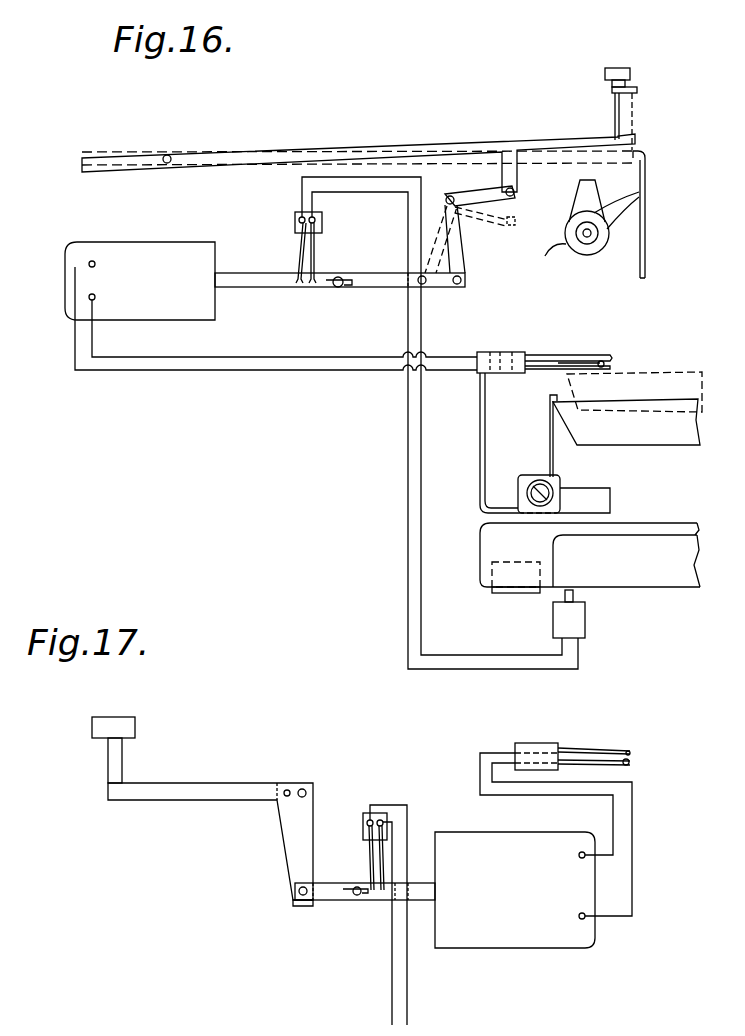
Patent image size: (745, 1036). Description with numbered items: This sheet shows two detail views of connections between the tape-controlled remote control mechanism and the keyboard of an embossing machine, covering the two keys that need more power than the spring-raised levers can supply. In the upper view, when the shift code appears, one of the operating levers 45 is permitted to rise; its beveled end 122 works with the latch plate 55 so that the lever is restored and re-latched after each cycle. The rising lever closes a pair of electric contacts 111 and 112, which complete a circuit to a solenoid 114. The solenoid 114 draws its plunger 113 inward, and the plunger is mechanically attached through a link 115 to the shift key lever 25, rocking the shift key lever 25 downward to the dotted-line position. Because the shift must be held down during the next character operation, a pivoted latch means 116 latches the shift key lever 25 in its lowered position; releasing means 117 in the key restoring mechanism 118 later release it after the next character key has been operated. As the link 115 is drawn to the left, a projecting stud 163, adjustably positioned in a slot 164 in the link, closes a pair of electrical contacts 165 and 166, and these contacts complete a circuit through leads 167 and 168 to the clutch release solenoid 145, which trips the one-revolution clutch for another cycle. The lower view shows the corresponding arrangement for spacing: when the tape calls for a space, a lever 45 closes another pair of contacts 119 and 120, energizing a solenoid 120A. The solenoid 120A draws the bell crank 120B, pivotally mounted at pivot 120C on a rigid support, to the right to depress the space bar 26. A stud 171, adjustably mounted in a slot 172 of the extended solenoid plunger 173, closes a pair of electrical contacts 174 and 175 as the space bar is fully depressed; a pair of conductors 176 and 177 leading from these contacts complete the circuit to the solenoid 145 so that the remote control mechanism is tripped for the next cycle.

In FIG. 16, the shift key lever 25 is at (568, 120).
In FIG. 16, the latch means 116 is at (646, 191).
In FIG. 16, the releasing means 117 is at (603, 249).
In FIG. 16, the key restoring mechanism 118 is at (546, 264).
In FIG. 16, the solenoid 114 is at (217, 229).
In FIG. 16, the plunger 113 is at (243, 265).
In FIG. 16, the link 115 is at (378, 270).
In FIG. 16, the projecting stud 163 is at (339, 276).
In FIG. 16, the slot 164 is at (336, 291).
In FIG. 16, the electrical contact 165 is at (316, 252).
In FIG. 16, the electrical contact 166 is at (298, 250).
In FIG. 16, the lead 167 is at (477, 647).
In FIG. 16, the lead 168 is at (496, 663).
In FIG. 16, the clutch release solenoid 145 is at (588, 631).
In FIG. 16, the electric contact 111 is at (580, 342).
In FIG. 16, the electric contact 112 is at (612, 368).
In FIG. 16, the beveled end 122 is at (567, 375).
In FIG. 16, the latch plate 55 is at (548, 396).
In FIG. 16, the operating lever 45 is at (587, 447).
In FIG. 17, the space bar 26 is at (121, 717).
In FIG. 17, the pivot 120C is at (323, 763).
In FIG. 17, the bell crank 120B is at (292, 906).
In FIG. 17, the slot 172 is at (346, 899).
In FIG. 17, the solenoid plunger 173 is at (361, 901).
In FIG. 17, the stud 171 is at (352, 882).
In FIG. 17, the electrical contact 175 is at (375, 900).
In FIG. 17, the electrical contact 174 is at (385, 900).
In FIG. 17, the conductor 176 is at (393, 1000).
In FIG. 17, the conductor 177 is at (409, 994).
In FIG. 17, the solenoid 120A is at (549, 948).
In FIG. 17, the contact 119 is at (591, 748).
In FIG. 17, the contact 120 is at (630, 766).